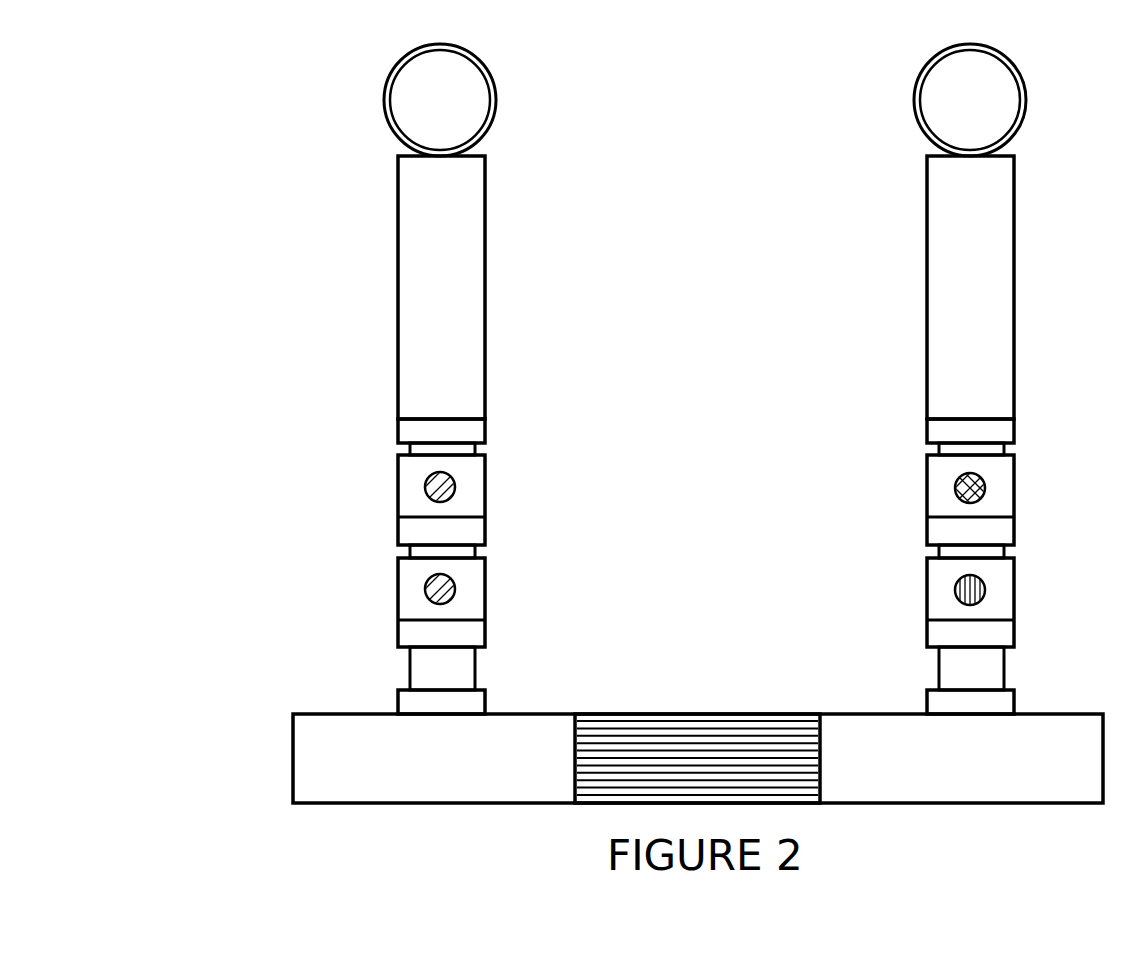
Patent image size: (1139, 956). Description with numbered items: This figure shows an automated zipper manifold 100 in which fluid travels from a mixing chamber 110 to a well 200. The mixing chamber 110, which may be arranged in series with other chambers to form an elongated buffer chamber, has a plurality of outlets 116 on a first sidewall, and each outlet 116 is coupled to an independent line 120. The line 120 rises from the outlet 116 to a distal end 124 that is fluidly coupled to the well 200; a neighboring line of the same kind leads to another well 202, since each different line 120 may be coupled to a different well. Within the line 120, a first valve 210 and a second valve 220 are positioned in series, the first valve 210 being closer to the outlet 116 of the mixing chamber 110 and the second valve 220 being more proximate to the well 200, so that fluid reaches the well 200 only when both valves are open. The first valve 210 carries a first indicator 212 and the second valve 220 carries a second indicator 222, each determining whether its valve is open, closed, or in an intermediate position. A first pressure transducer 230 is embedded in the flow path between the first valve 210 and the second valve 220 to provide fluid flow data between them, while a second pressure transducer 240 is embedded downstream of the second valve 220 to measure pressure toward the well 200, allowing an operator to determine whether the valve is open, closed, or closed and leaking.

The automated zipper manifold 100 is at (288, 90).
The mixing chamber 110 is at (326, 740).
The outlet 116 is at (438, 705).
The line 120 is at (408, 689).
The distal end 124 is at (452, 418).
The well 200 is at (496, 80).
The second roller 202 is at (1023, 62).
The first valve 210 is at (405, 580).
The first indicator 212 is at (456, 590).
The second valve 220 is at (410, 478).
The second indicator 222 is at (456, 487).
The first pressure transducer 230 is at (437, 554).
The second pressure transducer 240 is at (438, 449).